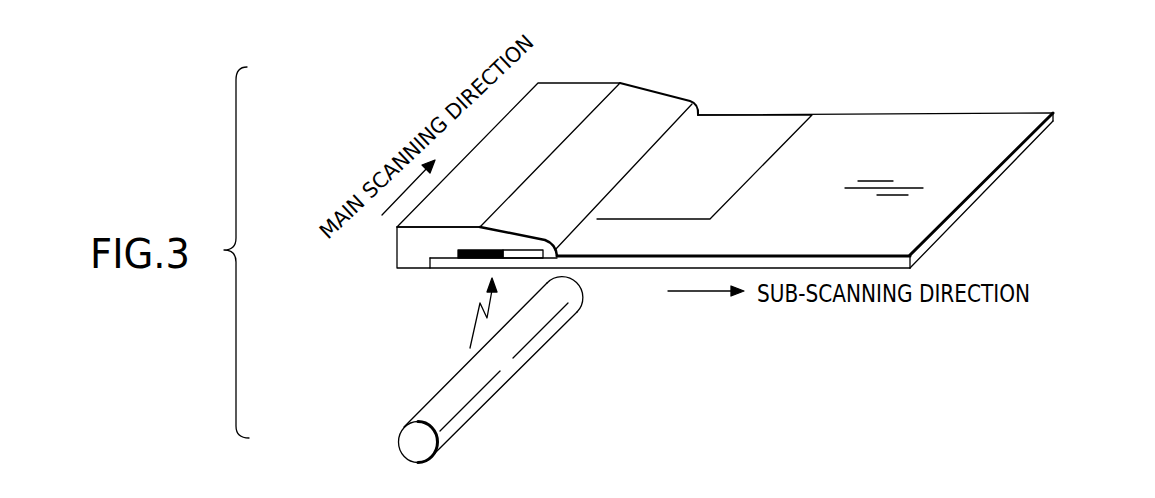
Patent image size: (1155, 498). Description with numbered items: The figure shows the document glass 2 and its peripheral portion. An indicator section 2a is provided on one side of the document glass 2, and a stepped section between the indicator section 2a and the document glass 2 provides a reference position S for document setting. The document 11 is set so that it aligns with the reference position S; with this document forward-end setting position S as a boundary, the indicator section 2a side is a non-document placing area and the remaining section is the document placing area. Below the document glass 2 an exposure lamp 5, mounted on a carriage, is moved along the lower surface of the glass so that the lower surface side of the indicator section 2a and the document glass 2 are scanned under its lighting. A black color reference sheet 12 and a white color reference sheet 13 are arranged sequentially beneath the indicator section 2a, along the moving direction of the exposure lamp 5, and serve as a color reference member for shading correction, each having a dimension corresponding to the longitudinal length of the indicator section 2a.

The document glass 2 is at (947, 120).
The indicator section 2a is at (660, 102).
The reference position S is at (693, 99).
The document 11 is at (765, 120).
The black color reference sheet 12 is at (467, 259).
The white color reference sheet 13 is at (522, 253).
The exposure lamp 5 is at (557, 325).